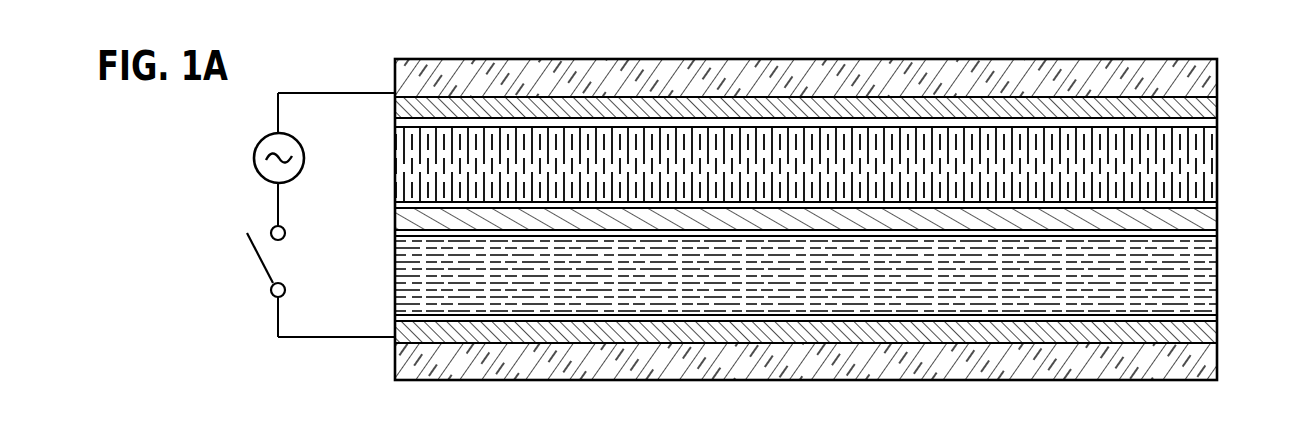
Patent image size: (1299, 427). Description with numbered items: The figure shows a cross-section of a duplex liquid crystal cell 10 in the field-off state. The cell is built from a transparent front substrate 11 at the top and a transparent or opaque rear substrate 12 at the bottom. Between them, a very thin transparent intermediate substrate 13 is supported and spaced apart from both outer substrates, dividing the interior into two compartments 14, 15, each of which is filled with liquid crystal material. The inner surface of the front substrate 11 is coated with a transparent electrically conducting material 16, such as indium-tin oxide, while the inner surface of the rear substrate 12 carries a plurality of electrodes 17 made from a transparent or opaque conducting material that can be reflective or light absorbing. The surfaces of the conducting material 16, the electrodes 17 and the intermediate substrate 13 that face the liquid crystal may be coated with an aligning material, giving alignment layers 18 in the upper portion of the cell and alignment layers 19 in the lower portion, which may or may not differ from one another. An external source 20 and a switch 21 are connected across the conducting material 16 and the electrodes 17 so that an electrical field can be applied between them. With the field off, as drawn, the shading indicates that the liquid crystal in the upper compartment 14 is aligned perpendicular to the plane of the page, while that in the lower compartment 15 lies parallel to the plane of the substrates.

The cell 10 is at (786, 213).
The transparent front substrate 11 is at (742, 72).
The rear substrate 12 is at (738, 368).
The intermediate substrate 13 is at (1212, 222).
The compartment 14 is at (430, 160).
The compartment 15 is at (430, 270).
The transparent electrically conducting material 16 is at (1210, 108).
The electrodes 17 is at (1210, 334).
The alignment layers 18 is at (809, 168).
The alignment layers 19 is at (809, 277).
The external source 20 is at (260, 175).
The switch 21 is at (256, 258).